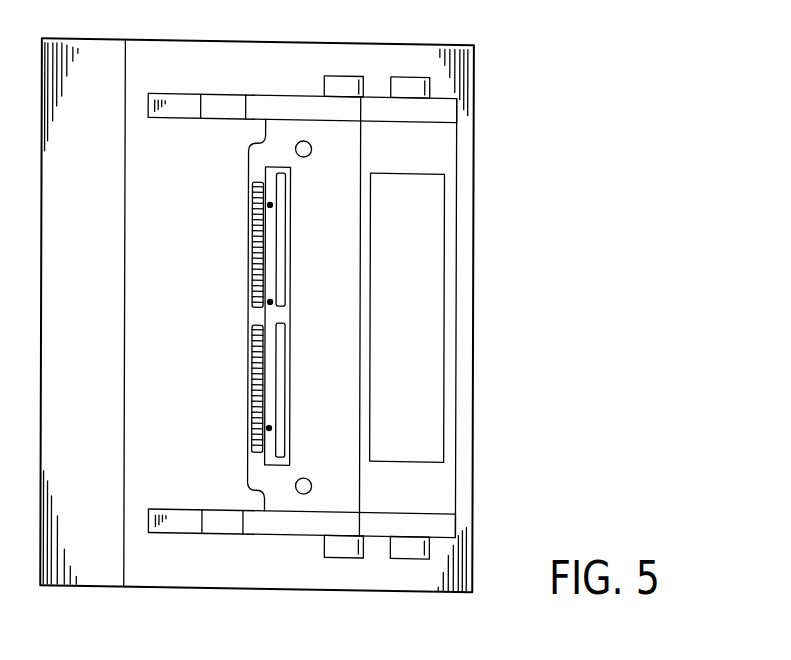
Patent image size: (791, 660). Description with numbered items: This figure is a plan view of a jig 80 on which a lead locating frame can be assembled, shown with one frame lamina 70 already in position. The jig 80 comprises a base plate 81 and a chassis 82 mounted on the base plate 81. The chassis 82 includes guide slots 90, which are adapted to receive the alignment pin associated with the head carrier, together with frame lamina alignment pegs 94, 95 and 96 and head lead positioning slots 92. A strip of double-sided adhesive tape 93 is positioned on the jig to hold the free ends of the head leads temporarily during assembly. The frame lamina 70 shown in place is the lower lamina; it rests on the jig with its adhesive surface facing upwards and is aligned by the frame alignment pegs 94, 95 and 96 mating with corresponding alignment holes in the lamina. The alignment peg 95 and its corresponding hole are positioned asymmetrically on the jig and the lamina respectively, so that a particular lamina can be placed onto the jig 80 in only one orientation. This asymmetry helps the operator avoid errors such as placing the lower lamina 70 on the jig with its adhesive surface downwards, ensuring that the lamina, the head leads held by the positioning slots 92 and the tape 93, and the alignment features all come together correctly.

The frame lamina 70 is at (284, 307).
The jig 80 is at (486, 38).
The base plate 81 is at (152, 58).
The chassis 82 is at (442, 520).
The guide slots 90 is at (224, 100).
The head lead positioning slots 92 is at (253, 341).
The strip of double-sided adhesive tape 93 is at (433, 336).
The frame lamina alignment peg 94 is at (273, 199).
The frame lamina alignment peg 95 is at (274, 298).
The frame lamina alignment peg 96 is at (272, 423).